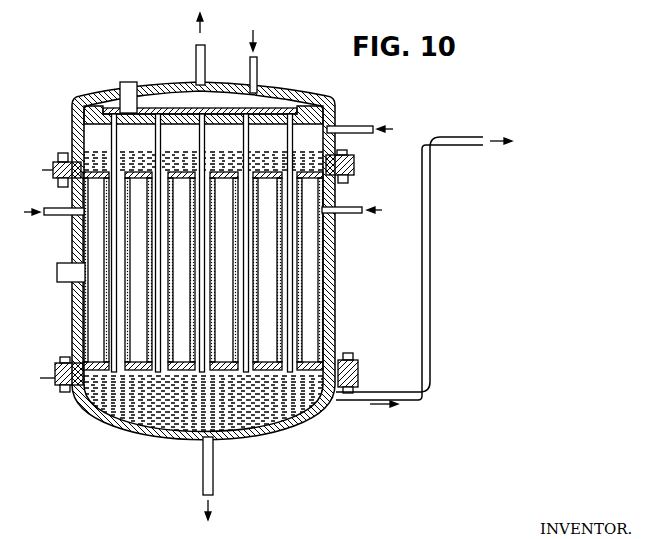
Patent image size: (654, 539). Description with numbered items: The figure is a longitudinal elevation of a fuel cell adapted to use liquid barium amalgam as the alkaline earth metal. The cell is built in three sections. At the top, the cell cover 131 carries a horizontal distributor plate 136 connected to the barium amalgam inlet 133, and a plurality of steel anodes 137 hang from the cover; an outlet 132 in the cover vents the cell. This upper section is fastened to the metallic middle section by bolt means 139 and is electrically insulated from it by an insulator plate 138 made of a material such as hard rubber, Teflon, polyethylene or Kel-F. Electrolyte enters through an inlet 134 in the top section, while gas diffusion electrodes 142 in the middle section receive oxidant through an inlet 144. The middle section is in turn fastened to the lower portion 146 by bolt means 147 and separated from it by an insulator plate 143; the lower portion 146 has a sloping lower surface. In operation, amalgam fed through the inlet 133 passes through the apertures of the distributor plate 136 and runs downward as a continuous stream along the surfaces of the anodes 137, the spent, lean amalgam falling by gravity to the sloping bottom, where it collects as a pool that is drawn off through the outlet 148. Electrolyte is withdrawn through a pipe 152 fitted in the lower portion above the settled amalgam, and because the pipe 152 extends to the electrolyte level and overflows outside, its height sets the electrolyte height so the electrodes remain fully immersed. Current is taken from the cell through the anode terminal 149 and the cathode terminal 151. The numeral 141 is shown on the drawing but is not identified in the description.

The cell cover 131 is at (172, 88).
The outlet 132 is at (205, 52).
The barium amalgam inlet 133 is at (258, 66).
The inlet 134 is at (358, 126).
The horizontal distributor plate 136 is at (178, 125).
The steel anodes 137 is at (150, 157).
The insulator plate 138 is at (42, 170).
The bolt means 139 is at (60, 157).
The vessel shell 141 is at (336, 250).
The gas diffusion electrodes 142 is at (180, 371).
The insulator plate 143 is at (50, 379).
The inlet 144 is at (345, 207).
The lower portion 146 is at (150, 434).
The bolt means 147 is at (61, 360).
The outlet 148 is at (214, 478).
The anode terminal 149 is at (121, 86).
The cathode terminal 151 is at (60, 281).
The pipe 152 is at (460, 137).